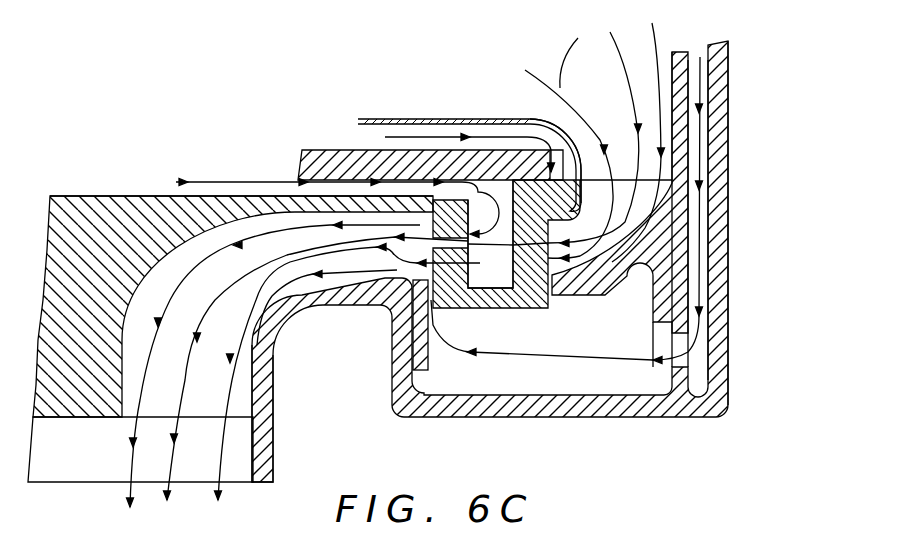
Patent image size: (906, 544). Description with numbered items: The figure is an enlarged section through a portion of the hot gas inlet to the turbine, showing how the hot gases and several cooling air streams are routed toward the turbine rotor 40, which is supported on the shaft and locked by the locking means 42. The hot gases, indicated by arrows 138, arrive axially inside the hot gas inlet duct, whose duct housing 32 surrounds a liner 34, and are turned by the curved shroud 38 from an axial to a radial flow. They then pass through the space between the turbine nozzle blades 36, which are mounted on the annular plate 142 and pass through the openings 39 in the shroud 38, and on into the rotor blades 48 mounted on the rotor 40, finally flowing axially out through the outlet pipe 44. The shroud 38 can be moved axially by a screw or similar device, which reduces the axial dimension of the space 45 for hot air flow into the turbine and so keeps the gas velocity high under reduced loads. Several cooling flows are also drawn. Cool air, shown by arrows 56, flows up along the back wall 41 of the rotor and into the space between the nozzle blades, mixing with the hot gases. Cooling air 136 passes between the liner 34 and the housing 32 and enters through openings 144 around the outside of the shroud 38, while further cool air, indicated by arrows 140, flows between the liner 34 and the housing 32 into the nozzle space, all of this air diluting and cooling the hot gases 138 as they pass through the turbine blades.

The housing of the hot gas inlet duct 32 is at (327, 150).
The liner 34 is at (441, 118).
The turbine nozzle blades 36 is at (547, 308).
The shroud 38 is at (627, 268).
The openings in the shroud 39 is at (430, 312).
The turbine rotor 40 is at (80, 238).
The back wall of the rotor 41 is at (142, 194).
The locking means 42 is at (80, 457).
The outlet pipe 44 is at (273, 458).
The space for hot air flow 45 is at (600, 238).
The rotor blades 48 is at (262, 350).
The cool air flow arrows 56 is at (178, 182).
The cooling air flow 136 is at (382, 316).
The hot gas flow arrows 138 is at (656, 48).
The cool air flow arrows 140 is at (498, 183).
The annular plate 142 is at (538, 128).
The openings around the shroud 144 is at (668, 364).